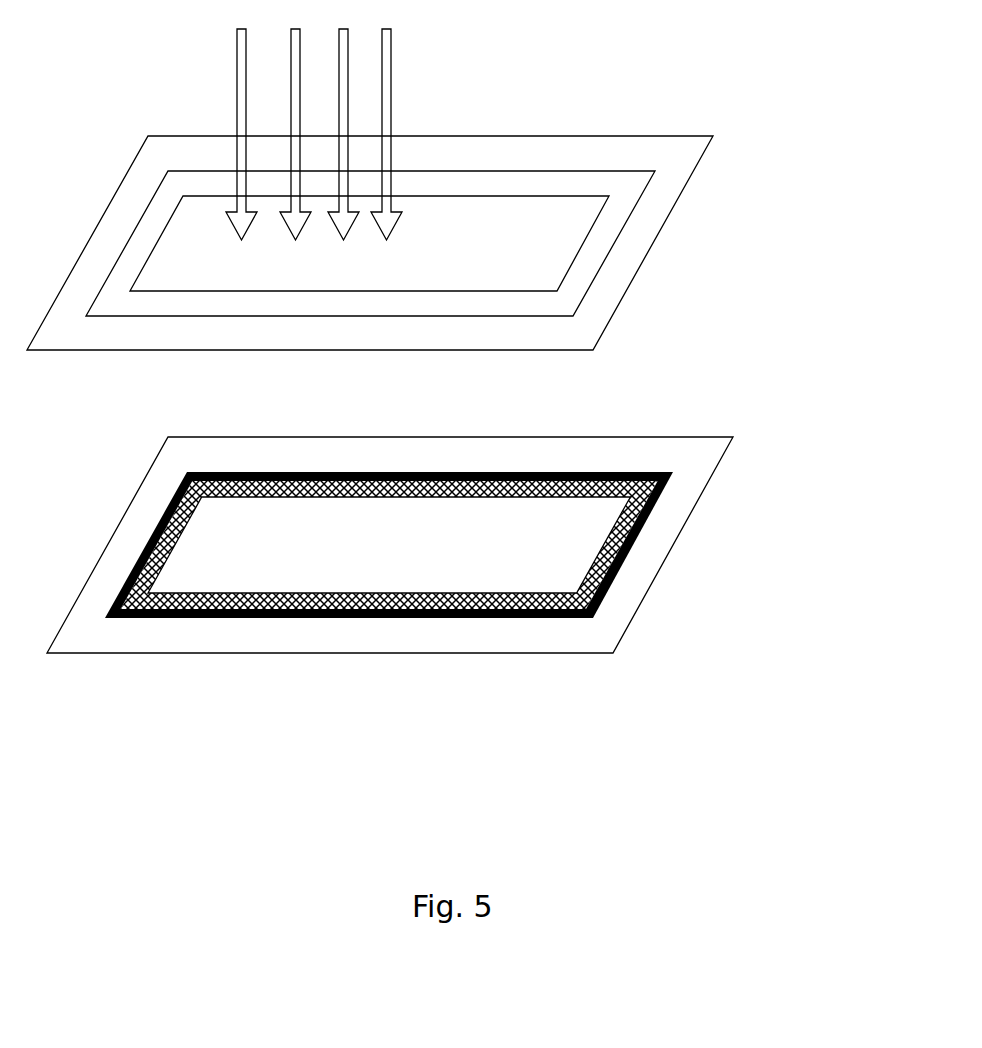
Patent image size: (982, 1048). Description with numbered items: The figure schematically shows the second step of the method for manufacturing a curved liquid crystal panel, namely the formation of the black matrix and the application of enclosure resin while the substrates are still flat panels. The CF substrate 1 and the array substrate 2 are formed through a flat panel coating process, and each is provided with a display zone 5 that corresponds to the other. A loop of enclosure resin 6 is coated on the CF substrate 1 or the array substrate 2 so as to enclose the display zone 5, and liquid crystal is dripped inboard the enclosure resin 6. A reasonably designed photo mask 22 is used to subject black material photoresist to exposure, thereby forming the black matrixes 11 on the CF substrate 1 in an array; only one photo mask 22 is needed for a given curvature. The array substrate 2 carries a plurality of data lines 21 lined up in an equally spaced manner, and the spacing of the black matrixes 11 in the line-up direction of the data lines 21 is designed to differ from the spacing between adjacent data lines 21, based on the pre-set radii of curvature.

The CF substrate 1 is at (535, 653).
The array substrate 2 is at (545, 135).
The data lines 21 is at (583, 297).
The photo mask 22 is at (540, 247).
The display zone 5 is at (387, 547).
The enclosure resin 6 is at (602, 600).
The black matrixes 11 is at (640, 537).